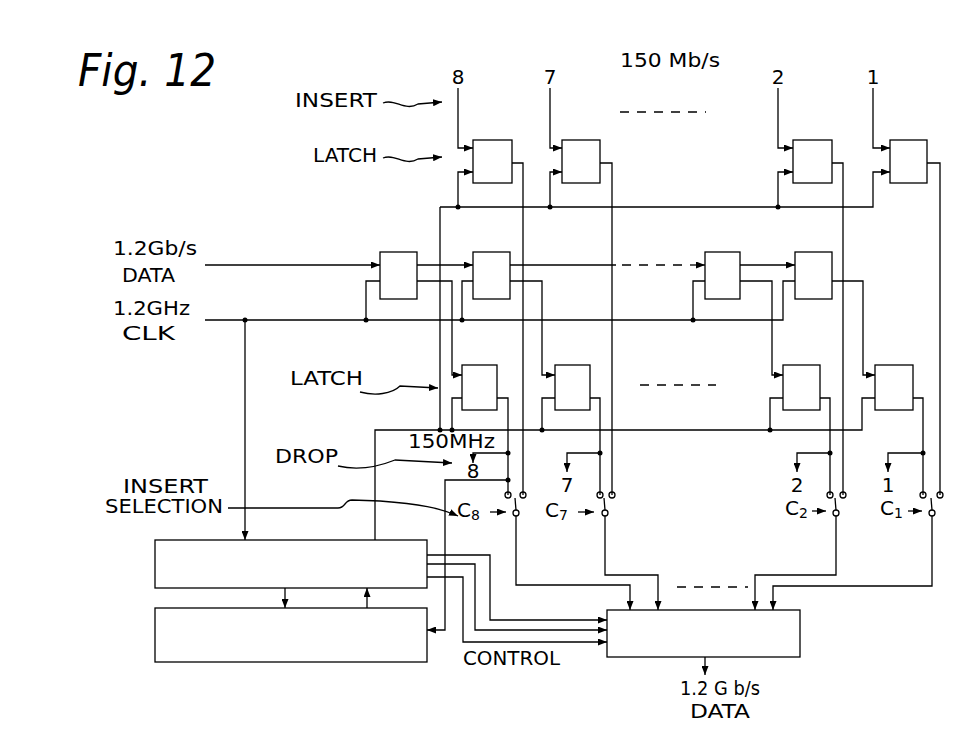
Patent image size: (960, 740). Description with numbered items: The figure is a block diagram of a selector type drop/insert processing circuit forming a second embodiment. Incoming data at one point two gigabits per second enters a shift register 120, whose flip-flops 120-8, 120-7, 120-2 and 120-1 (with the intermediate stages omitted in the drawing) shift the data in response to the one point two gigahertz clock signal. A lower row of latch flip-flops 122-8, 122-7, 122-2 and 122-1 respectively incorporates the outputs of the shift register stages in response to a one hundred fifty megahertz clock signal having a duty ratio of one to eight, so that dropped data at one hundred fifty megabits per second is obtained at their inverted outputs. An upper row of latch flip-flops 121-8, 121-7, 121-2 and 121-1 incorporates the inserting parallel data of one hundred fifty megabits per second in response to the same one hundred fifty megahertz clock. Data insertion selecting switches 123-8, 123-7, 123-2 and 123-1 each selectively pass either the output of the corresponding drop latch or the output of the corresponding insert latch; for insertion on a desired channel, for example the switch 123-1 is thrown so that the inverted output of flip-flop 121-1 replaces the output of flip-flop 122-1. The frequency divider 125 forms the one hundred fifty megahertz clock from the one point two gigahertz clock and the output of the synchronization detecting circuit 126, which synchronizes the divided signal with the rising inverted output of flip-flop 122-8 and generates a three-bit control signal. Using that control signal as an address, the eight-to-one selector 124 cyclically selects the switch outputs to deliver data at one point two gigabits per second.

The shift register 120 is at (376, 251).
The flip-flop 120-8 is at (393, 252).
The flip-flop 120-7 is at (485, 252).
The flip-flop 120-2 is at (714, 252).
The flip-flop 120-1 is at (804, 252).
The flip-flop 121-8 is at (490, 140).
The flip-flop 121-7 is at (576, 140).
The flip-flop 121-2 is at (806, 140).
The flip-flop 121-1 is at (906, 140).
The flip-flop 122-8 is at (474, 365).
The flip-flop 122-7 is at (565, 365).
The flip-flop 122-2 is at (793, 365).
The flip-flop 122-1 is at (888, 365).
The data insertion selecting switch 123-8 is at (512, 518).
The data insertion selecting switch 123-7 is at (600, 520).
The data insertion selecting switch 123-2 is at (828, 518).
The data insertion selecting switch 123-1 is at (928, 518).
The 8:1 selector 124 is at (800, 637).
The frequency divider 125 is at (155, 562).
The synchronization detecting circuit 126 is at (155, 632).